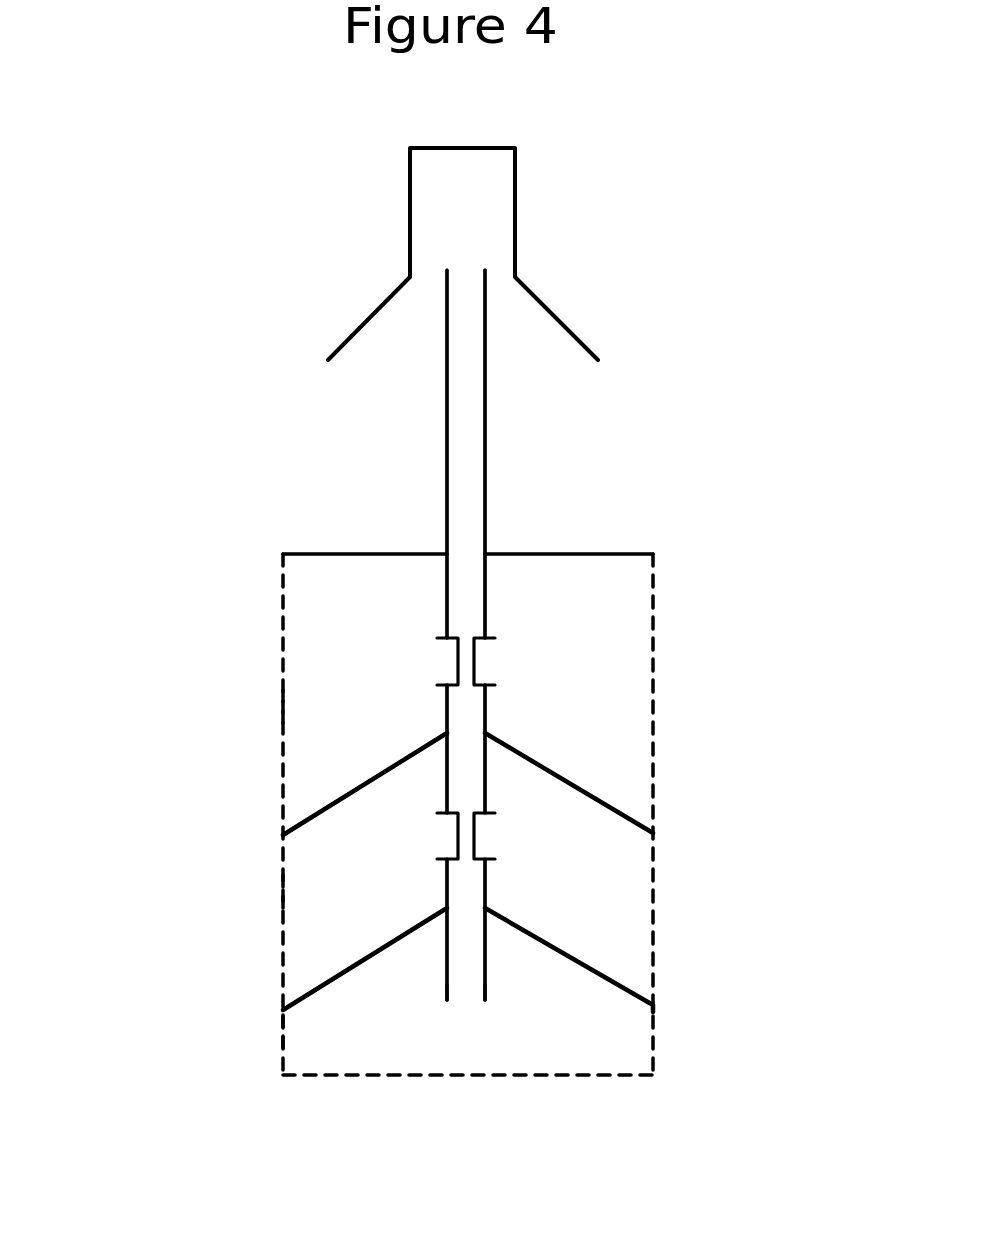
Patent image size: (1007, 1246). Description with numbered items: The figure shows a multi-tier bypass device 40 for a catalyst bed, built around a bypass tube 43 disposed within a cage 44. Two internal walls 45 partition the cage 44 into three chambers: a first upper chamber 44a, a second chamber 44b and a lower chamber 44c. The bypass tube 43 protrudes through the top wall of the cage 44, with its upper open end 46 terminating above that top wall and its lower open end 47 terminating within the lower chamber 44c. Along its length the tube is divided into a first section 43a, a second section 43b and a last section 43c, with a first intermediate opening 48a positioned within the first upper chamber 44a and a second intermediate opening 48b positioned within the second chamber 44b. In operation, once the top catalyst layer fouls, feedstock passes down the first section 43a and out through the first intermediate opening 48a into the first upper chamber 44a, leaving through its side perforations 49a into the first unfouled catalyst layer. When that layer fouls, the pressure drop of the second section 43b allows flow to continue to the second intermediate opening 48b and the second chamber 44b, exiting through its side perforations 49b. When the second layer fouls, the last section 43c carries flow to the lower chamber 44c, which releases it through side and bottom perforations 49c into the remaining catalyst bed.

The drip irrigation emitter assembly 40 is at (720, 498).
The bypass tube 43 is at (485, 427).
The first section of the bypass tube 43a is at (430, 473).
The second section of the bypass tube 43b is at (447, 785).
The last section of the bypass tube 43c is at (438, 960).
The cage 44 is at (657, 925).
The first upper chamber 44a is at (323, 673).
The second chamber 44b is at (320, 948).
The lower chamber 44c is at (602, 1057).
The internal wall 45 is at (600, 795).
The upper open end 46 is at (463, 268).
The lower open end 47 is at (468, 1003).
The first intermediate opening 48a is at (505, 657).
The second intermediate opening 48b is at (497, 838).
The side perforations of the first chamber 49a is at (280, 707).
The side perforations of the second chamber 49b is at (280, 893).
The third compartment 49c is at (280, 1033).